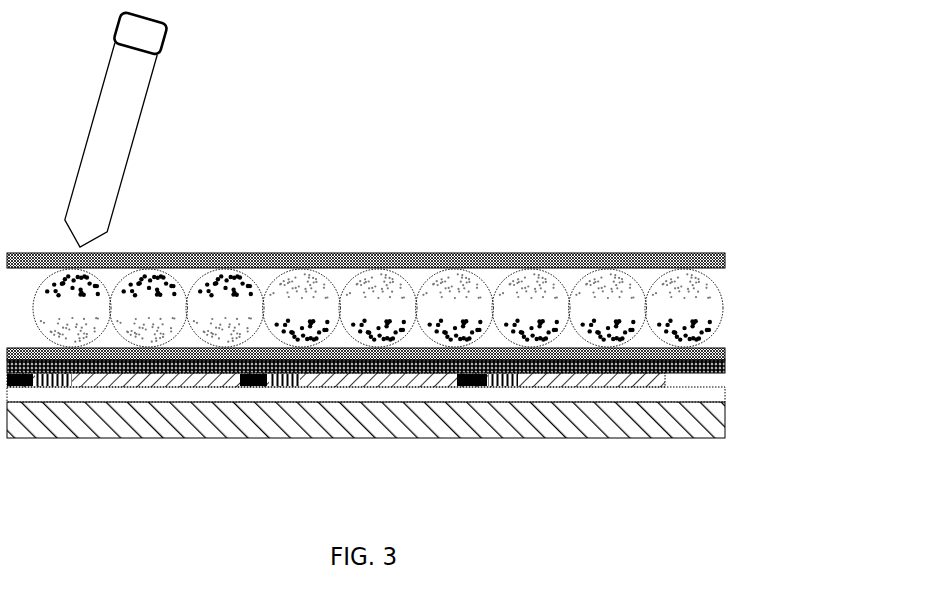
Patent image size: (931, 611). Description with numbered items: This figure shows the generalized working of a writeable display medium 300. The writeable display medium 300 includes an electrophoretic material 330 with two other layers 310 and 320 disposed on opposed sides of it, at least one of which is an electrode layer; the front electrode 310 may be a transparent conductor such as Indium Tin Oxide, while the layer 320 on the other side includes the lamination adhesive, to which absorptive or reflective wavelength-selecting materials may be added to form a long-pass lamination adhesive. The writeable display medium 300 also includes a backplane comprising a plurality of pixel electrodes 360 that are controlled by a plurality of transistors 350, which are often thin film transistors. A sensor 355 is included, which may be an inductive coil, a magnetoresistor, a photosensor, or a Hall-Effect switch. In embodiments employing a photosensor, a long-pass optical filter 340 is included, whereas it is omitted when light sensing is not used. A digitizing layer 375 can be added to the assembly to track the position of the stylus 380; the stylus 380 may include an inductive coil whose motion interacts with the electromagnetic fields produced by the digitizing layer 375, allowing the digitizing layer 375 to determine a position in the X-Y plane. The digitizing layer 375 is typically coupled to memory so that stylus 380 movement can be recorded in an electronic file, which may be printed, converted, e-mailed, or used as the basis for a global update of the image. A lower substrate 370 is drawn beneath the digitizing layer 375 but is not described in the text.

The writeable display medium 300 is at (669, 103).
The front electrode 310 is at (607, 262).
The layer 320 is at (722, 353).
The electrophoretic material 330 is at (733, 308).
The long-pass optical filter 340 is at (715, 368).
The transistors 350 is at (505, 385).
The sensor 355 is at (255, 380).
The pixel electrodes 360 is at (627, 387).
The substrate 370 is at (78, 430).
The digitizing layer 375 is at (712, 396).
The stylus 380 is at (122, 122).